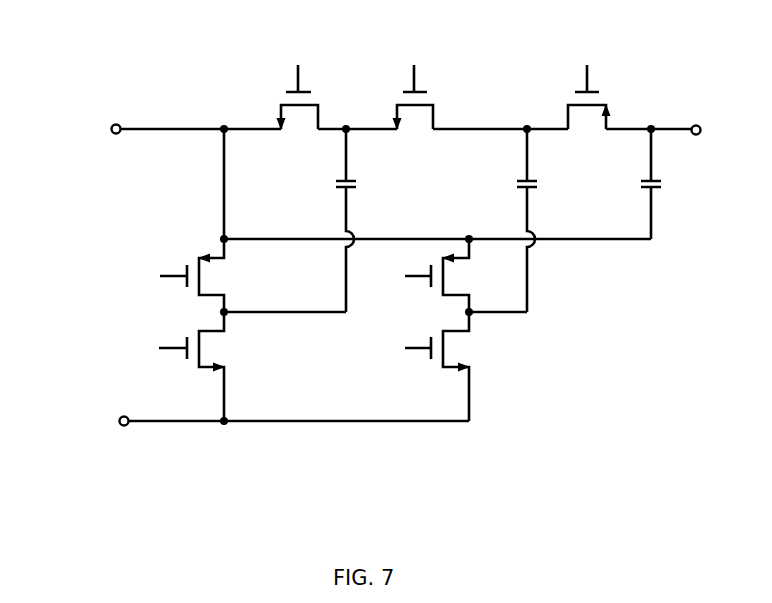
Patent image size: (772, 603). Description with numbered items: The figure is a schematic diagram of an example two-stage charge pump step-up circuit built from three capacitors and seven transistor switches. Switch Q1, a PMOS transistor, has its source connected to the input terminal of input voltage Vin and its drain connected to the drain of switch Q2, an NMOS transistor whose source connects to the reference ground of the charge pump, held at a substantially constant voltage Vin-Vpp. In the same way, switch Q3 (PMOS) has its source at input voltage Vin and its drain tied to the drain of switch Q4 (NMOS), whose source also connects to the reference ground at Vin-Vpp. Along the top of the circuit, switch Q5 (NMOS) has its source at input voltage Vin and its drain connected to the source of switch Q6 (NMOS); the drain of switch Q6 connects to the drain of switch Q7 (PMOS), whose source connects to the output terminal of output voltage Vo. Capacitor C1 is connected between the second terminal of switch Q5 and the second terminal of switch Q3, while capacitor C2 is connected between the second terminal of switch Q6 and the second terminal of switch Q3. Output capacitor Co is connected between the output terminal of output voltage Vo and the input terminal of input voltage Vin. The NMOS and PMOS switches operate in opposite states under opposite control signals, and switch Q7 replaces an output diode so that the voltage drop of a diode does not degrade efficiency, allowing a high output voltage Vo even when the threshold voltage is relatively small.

The switch Q1 is at (210, 275).
The switch Q2 is at (209, 366).
The switch Q3 is at (455, 275).
The switch Q4 is at (457, 366).
The switch Q5 is at (298, 84).
The switch Q6 is at (413, 84).
The switch Q7 is at (589, 83).
The capacitor C1 is at (365, 220).
The capacitor C2 is at (548, 220).
The output capacitor Co is at (668, 184).
The input voltage Vin is at (173, 127).
The output voltage Vo is at (677, 128).
The reference ground voltage Vin-Vpp is at (247, 419).